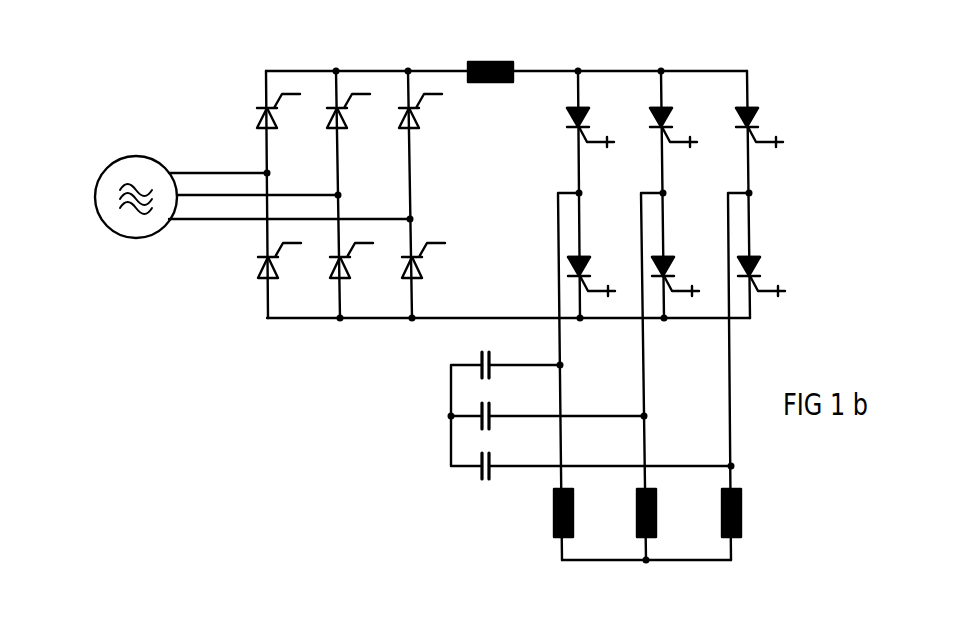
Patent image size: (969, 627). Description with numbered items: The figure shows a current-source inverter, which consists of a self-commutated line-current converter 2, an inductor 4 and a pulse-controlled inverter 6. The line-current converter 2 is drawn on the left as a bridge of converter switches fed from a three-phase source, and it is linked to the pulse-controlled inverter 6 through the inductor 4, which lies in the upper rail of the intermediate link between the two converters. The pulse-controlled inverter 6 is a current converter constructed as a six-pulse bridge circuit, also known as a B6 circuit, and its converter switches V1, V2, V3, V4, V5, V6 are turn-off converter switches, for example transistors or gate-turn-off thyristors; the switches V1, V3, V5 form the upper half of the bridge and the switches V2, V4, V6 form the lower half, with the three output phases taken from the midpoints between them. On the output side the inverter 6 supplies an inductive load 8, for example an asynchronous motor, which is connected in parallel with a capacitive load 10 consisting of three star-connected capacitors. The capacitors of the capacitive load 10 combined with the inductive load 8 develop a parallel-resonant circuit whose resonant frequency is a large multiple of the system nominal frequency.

The self-commutated line-current converter 2 is at (320, 326).
The inductor 4 is at (490, 60).
The pulse-controlled inverter 6 is at (679, 177).
The inductive load 8 is at (676, 533).
The capacitive load 10 is at (451, 438).
The converter switch V1 is at (591, 116).
The converter switch V2 is at (592, 265).
The converter switch V3 is at (674, 116).
The converter switch V4 is at (676, 265).
The converter switch V5 is at (760, 116).
The converter switch V6 is at (762, 265).